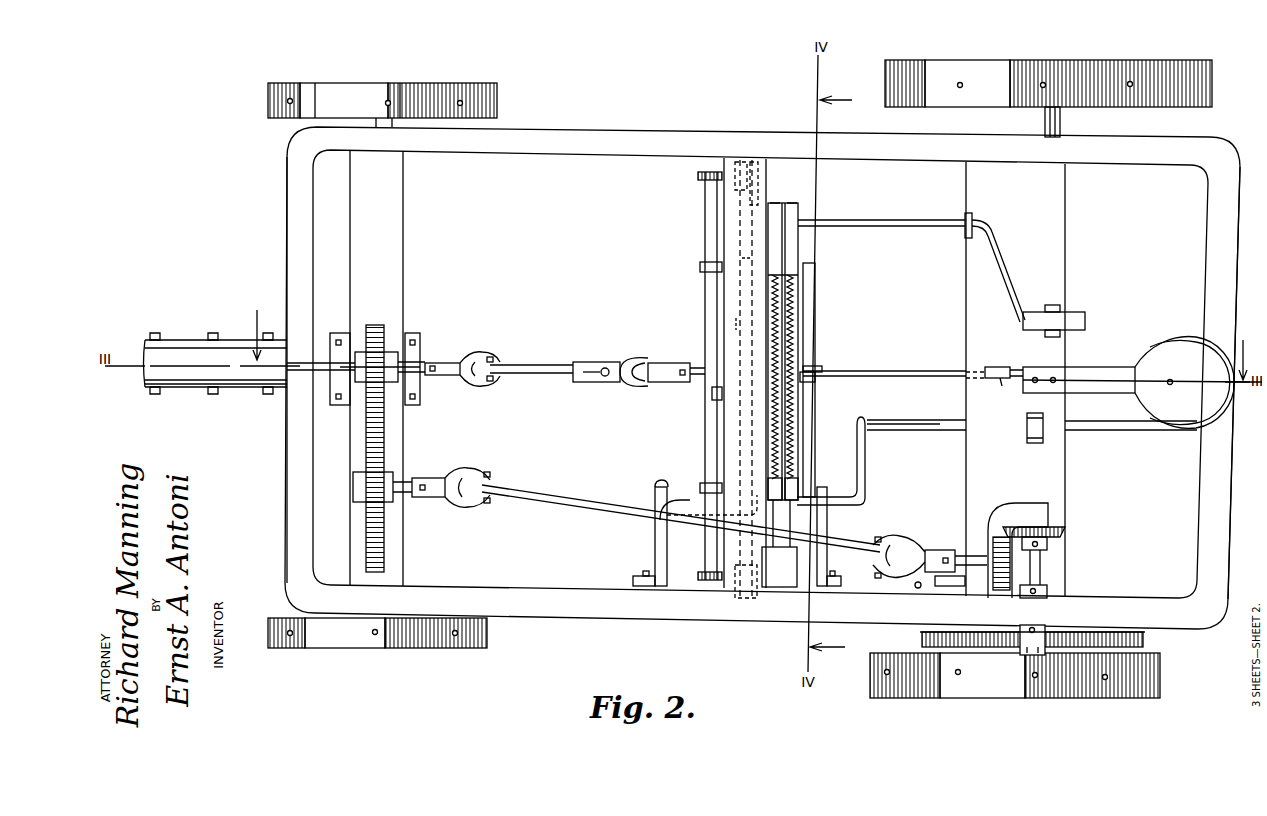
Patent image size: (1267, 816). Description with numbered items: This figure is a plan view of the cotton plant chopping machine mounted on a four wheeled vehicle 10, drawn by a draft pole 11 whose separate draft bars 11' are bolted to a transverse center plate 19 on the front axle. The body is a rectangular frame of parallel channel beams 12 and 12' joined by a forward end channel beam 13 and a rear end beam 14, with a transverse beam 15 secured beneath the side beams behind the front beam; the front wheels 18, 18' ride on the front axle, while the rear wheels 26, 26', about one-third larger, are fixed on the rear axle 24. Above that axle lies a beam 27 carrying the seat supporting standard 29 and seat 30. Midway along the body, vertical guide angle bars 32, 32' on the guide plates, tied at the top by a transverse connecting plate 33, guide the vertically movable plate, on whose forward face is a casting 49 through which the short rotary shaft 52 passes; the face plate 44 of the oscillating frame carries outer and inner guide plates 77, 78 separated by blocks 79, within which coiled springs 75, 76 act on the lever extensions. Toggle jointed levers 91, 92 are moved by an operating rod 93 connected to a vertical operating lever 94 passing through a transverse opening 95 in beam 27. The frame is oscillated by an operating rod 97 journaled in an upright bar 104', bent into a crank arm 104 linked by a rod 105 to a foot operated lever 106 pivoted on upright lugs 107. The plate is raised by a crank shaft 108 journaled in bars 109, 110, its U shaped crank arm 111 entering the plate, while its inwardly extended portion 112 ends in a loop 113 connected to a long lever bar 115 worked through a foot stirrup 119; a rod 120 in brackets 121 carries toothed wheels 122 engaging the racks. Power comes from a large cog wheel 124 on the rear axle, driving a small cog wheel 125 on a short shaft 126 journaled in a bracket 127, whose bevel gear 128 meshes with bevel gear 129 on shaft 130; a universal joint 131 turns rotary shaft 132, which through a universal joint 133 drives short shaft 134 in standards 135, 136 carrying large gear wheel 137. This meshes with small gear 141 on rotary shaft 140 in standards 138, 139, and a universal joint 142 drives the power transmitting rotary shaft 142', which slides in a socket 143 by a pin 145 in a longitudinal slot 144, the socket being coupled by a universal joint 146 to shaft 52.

The four wheeled vehicle 10 is at (762, 362).
The draft pole 11 is at (216, 373).
The draft bars 11' is at (216, 399).
The channel beam 12 is at (760, 374).
The channel beam 12' is at (545, 576).
The forward end channel beam 13 is at (287, 442).
The rear end beam 14 is at (1225, 308).
The transverse beam 15 is at (405, 281).
The front wheel 18 is at (382, 93).
The front wheel 18' is at (377, 645).
The transverse center plate 19 is at (416, 336).
The rear axle 24 is at (1063, 121).
The rear wheel 26 is at (1048, 70).
The rear wheel 26' is at (1019, 690).
The beam 27 is at (966, 318).
The seat supporting standard 29 is at (1105, 368).
The seat 30 is at (1170, 340).
The vertical guide angle bar 32 is at (730, 373).
The vertical guide angle bar 32' is at (758, 373).
The transverse connecting plate 33 is at (722, 302).
The face plate 44 is at (739, 248).
The casting 49 is at (712, 394).
The rotary shaft 52 is at (698, 364).
The coiled spring 75 is at (730, 318).
The coiled spring 76 is at (800, 312).
The outer guide plate 77 is at (815, 262).
The inner guide plate 78 is at (779, 567).
The block 79 is at (794, 203).
The toggle jointed lever 91 is at (813, 367).
The toggle jointed lever 92 is at (817, 378).
The operating rod 93 is at (868, 370).
The vertical operating lever 94 is at (1002, 386).
The transverse opening 95 is at (990, 367).
The operating rod 97 is at (908, 227).
The crank arm 104 is at (976, 271).
The upright bar 104' is at (944, 218).
The rod 105 is at (1030, 313).
The foot operated lever 106 is at (1085, 321).
The upright lugs 107 is at (1065, 311).
The crank shaft 108 is at (840, 497).
The bar 109 is at (838, 575).
The bar 110 is at (655, 546).
The U shaped crank arm 111 is at (676, 520).
The inwardly extended portion 112 is at (866, 466).
The loop 113 is at (876, 428).
The long lever bar 115 is at (905, 427).
The stirrup 119 is at (1027, 433).
The rod 120 is at (705, 447).
The bracket 121 is at (700, 267).
The toothed wheel 122 is at (697, 177).
The large cog wheel 124 is at (922, 639).
The small cog wheel 125 is at (1060, 636).
The short shaft 126 is at (1060, 572).
The bracket 127 is at (1028, 503).
The bevel gear 128 is at (1066, 533).
The bevel gear 129 is at (993, 541).
The shaft 130 is at (940, 576).
The universal joint 131 is at (900, 540).
The rotary shaft 132 is at (598, 506).
The universal joint 133 is at (464, 470).
The short shaft 134 is at (406, 480).
The standard 135 is at (408, 470).
The standard 136 is at (355, 482).
The large gear wheel 137 is at (385, 545).
The standard 138 is at (402, 380).
The standard 139 is at (364, 380).
The rotary shaft 140 is at (425, 367).
The small gear 141 is at (378, 325).
The universal joint 142 is at (469, 353).
The power transmitting rotary shaft 142' is at (531, 353).
The socket 143 is at (605, 366).
The longitudinal slot 144 is at (596, 382).
The pin 145 is at (607, 378).
The universal joint 146 is at (646, 358).